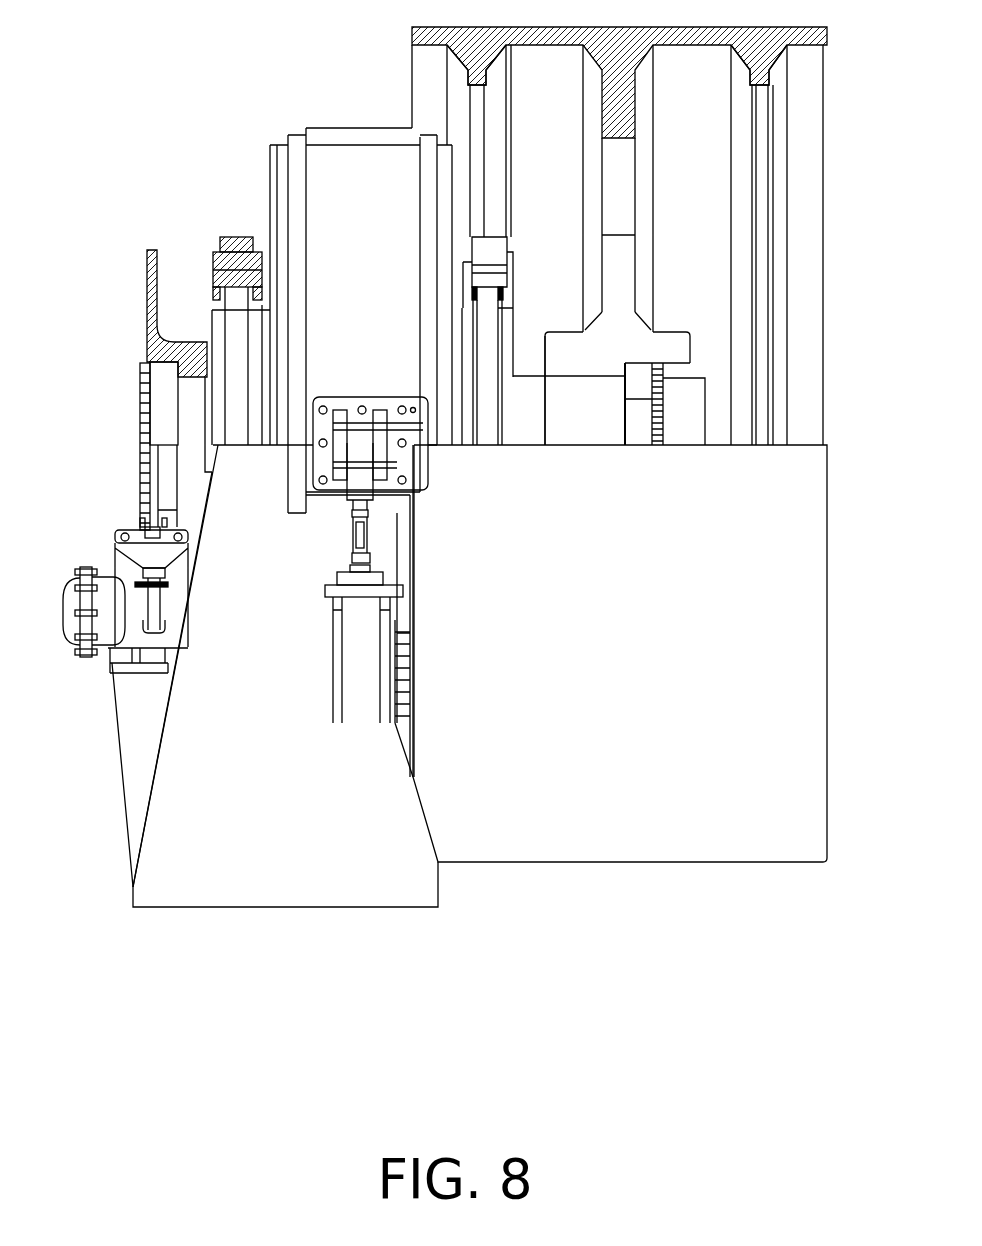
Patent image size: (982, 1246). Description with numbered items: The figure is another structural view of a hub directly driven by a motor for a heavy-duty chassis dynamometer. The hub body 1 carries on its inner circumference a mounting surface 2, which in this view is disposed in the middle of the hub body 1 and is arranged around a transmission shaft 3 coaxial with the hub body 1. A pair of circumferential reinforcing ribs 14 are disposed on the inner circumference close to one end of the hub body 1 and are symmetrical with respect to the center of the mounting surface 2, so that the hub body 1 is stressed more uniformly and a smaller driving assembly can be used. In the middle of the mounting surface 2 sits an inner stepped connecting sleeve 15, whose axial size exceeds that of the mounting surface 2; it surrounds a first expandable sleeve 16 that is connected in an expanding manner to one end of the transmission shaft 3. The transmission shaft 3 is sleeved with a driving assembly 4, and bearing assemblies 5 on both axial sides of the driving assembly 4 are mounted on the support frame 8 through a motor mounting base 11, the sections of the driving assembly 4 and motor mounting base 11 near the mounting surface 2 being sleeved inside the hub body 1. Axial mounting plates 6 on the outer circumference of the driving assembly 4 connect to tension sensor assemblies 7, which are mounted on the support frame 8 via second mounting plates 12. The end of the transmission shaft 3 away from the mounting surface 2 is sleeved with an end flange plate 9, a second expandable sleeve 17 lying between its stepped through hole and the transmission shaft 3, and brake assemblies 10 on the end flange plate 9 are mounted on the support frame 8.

The hub body 1 is at (785, 605).
The mounting surface 2 is at (615, 117).
The transmission shaft 3 is at (597, 425).
The driving assembly 4 is at (340, 177).
The bearing assemblies 5 is at (232, 293).
The axial mounting plates 6 is at (422, 437).
The tension sensor assemblies 7 is at (402, 522).
The support frame 8 is at (212, 788).
The end flange plate 9 is at (150, 295).
The brake assemblies 10 is at (135, 600).
The motor mounting base 11 is at (370, 507).
The second mounting plates 12 is at (387, 593).
The circumferential reinforcing ribs 14 is at (478, 70).
The connecting sleeve 15 is at (662, 345).
The first expandable sleeve 16 is at (662, 393).
The second expandable sleeve 17 is at (143, 410).